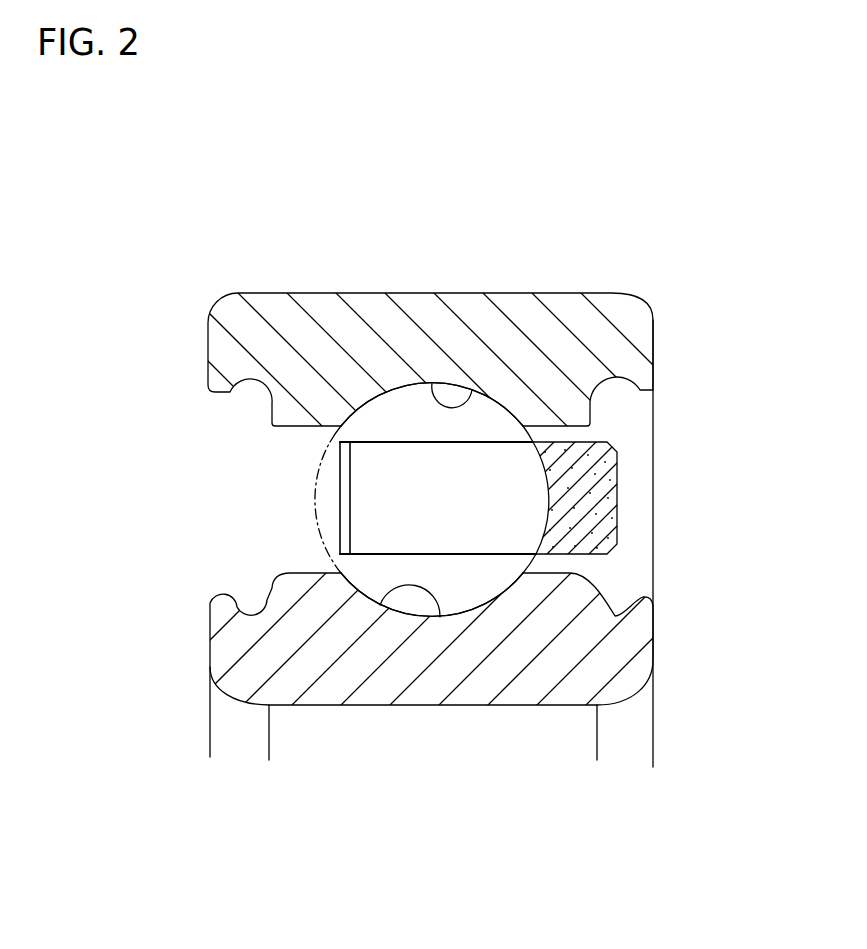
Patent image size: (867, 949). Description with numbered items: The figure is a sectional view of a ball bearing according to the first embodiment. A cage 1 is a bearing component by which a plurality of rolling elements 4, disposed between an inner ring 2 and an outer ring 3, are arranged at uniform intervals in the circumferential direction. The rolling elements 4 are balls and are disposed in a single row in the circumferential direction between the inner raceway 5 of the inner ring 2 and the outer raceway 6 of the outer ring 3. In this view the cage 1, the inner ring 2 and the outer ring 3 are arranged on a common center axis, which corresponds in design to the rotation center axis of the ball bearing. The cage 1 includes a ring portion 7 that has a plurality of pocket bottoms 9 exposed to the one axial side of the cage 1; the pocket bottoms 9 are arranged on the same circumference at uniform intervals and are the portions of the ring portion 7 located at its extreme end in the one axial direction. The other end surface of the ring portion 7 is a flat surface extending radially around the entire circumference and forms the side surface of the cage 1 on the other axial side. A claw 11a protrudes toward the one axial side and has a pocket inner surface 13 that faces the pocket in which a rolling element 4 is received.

The cage 1 is at (624, 460).
The inner ring 2 is at (658, 640).
The outer ring 3 is at (657, 344).
The rolling element 4 is at (312, 500).
The inner raceway 5 is at (398, 583).
The outer raceway 6 is at (460, 396).
The ring portion 7 is at (578, 497).
The pocket bottom 9 is at (547, 497).
The claw 11a is at (340, 516).
The pocket inner surface 13 is at (388, 478).